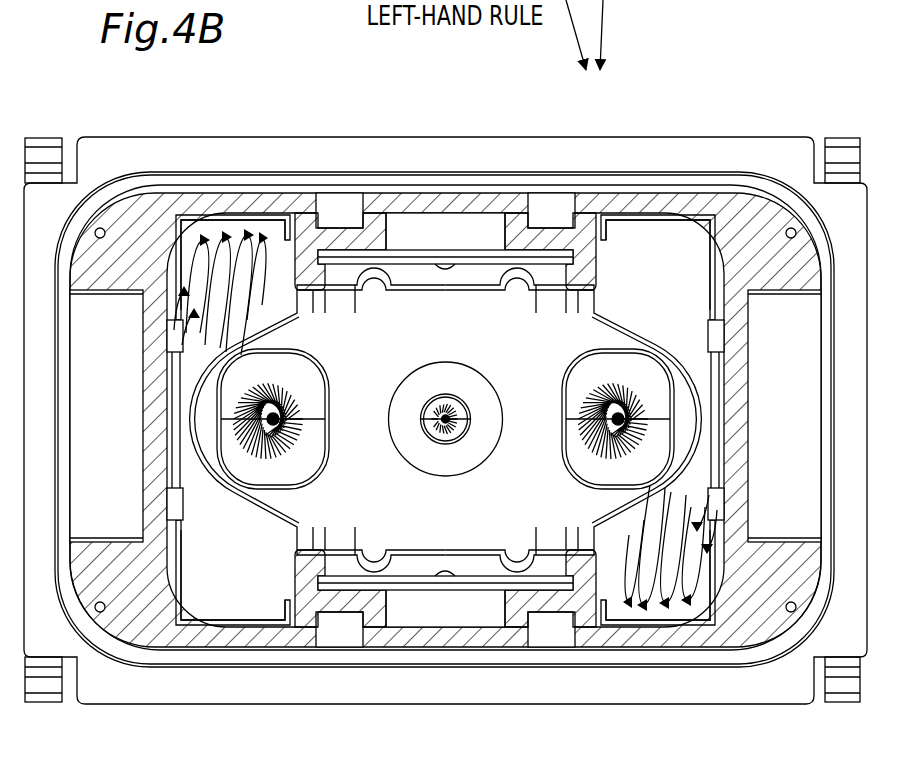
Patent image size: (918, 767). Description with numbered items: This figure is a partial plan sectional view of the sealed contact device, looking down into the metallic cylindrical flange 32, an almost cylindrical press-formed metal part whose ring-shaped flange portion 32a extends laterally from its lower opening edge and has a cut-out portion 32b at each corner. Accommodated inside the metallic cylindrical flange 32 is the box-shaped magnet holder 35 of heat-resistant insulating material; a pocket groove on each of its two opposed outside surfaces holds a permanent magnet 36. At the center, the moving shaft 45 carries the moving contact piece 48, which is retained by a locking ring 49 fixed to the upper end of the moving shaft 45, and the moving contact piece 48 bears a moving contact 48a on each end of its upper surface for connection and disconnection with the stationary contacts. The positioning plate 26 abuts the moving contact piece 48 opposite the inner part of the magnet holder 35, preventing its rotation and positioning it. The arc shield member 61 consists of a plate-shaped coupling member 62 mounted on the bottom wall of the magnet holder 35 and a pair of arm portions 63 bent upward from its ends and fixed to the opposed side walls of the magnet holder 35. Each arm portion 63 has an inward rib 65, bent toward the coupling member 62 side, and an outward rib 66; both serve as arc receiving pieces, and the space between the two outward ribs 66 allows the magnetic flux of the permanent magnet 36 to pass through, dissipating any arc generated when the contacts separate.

The metallic cylindrical flange 32 is at (713, 172).
The ring-shaped flange portion 32a is at (660, 157).
The cut-out portion 32b is at (90, 190).
The magnet holder 35 is at (403, 205).
The positioning plate 26 is at (424, 255).
The permanent magnet 36 is at (87, 413).
The moving contact piece 48 is at (421, 331).
The moving contact 48a is at (319, 461).
The locking ring 49 is at (469, 383).
The moving shaft 45 is at (429, 408).
The arc shield member 61 is at (172, 242).
The outward rib 66 is at (701, 586).
The coupling member 62 is at (640, 286).
The arm portion 63 is at (221, 214).
The inward rib 65 is at (303, 210).